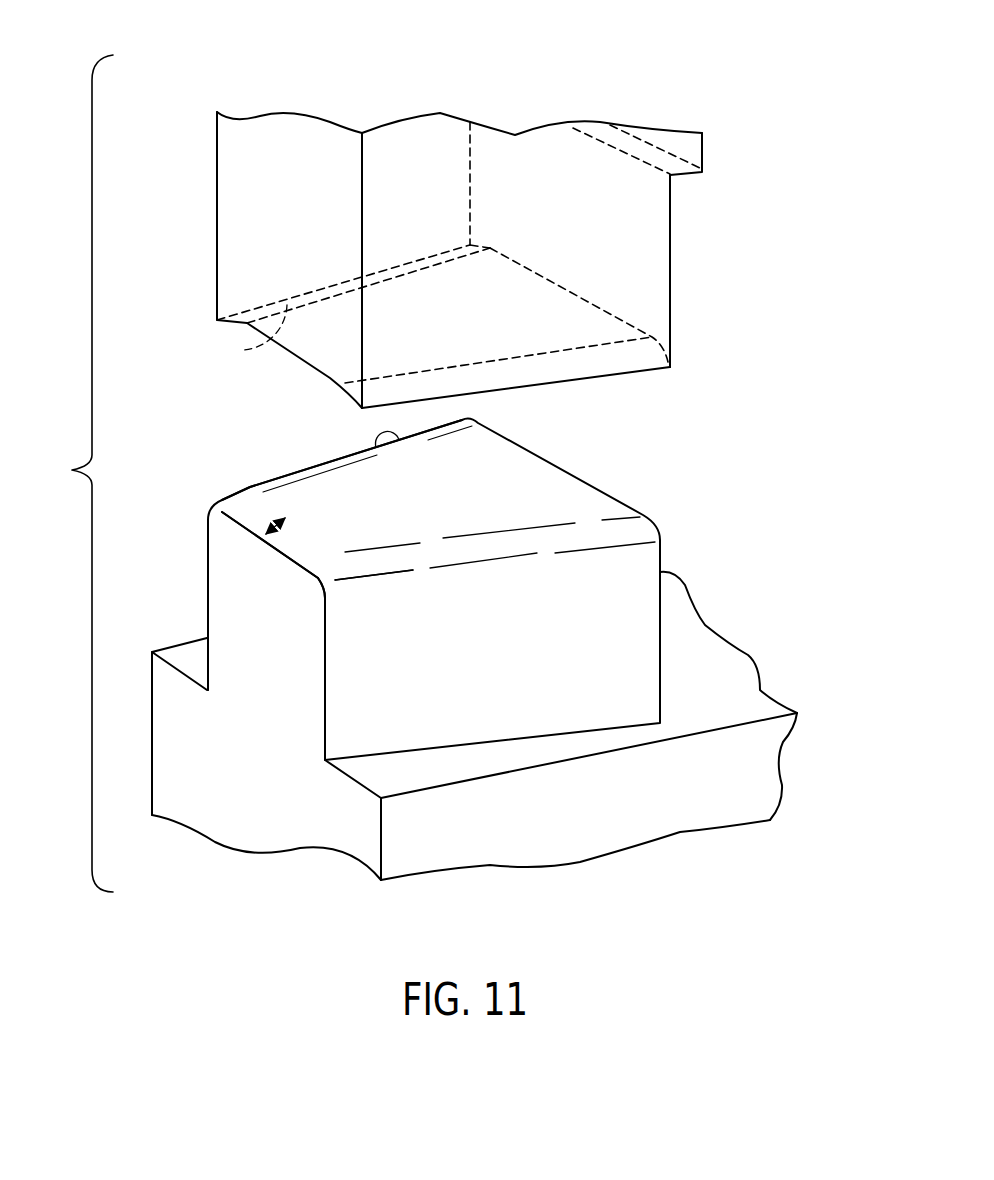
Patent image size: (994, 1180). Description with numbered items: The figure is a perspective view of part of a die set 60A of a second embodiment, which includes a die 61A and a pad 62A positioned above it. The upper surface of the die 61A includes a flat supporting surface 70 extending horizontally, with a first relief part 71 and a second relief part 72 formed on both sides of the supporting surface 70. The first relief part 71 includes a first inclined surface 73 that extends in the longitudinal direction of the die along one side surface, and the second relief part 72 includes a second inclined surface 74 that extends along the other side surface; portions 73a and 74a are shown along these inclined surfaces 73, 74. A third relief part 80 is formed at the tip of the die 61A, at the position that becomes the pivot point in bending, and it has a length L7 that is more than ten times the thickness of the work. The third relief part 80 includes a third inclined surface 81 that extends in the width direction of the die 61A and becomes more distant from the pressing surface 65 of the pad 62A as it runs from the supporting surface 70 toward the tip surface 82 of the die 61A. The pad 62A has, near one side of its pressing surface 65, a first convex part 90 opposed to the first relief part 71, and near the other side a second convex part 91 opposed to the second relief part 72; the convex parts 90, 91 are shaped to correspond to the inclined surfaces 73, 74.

The die set 60A is at (480, 86).
The pad 62A is at (645, 267).
The pressing surface 65 is at (557, 330).
The first convex part 90 is at (270, 349).
The second convex part 91 is at (490, 377).
The supporting surface 70 is at (522, 485).
The first relief part 71 is at (254, 472).
The second relief part 72 is at (384, 565).
The first inclined surface 73 is at (343, 455).
The protrusion 73a is at (397, 445).
The second inclined surface 74 is at (470, 553).
The upper groove line 74a is at (510, 528).
The third relief part 80 is at (311, 546).
The third inclined surface 81 is at (250, 510).
The tip surface 82 is at (228, 583).
The length of third relief part L7 is at (272, 513).
The die 61A is at (630, 633).